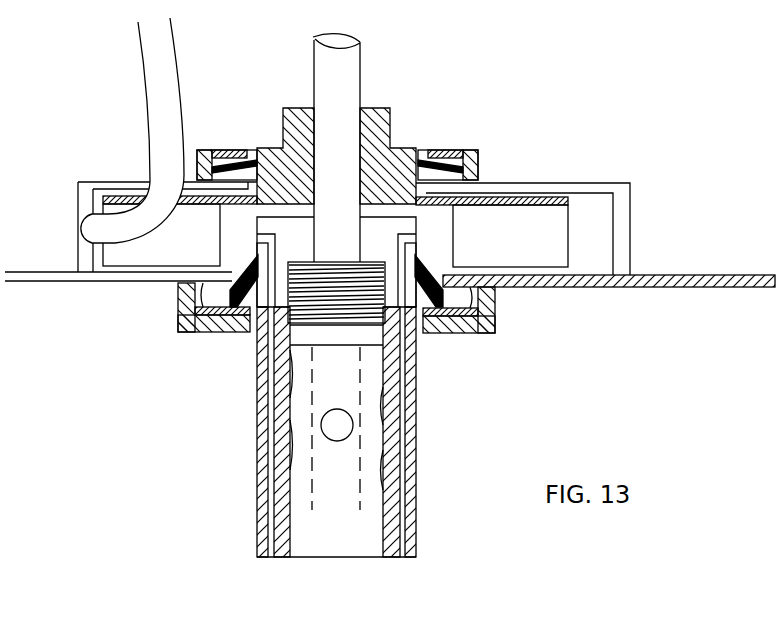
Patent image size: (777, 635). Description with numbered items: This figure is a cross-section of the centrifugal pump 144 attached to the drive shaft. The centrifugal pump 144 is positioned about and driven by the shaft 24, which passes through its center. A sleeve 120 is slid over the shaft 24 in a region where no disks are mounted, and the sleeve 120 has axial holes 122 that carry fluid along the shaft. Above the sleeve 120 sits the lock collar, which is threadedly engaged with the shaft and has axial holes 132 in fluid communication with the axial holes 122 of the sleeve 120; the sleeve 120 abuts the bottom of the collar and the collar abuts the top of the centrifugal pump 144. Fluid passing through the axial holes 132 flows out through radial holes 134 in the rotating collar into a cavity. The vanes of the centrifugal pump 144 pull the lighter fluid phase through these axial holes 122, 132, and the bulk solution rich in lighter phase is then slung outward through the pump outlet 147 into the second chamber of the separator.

The pump outlet 147 is at (179, 97).
The centrifugal pump 144 is at (520, 198).
The radial holes 134 is at (257, 234).
The axial holes 132 is at (266, 298).
The axial holes 122 is at (405, 372).
The sleeve 120 is at (416, 400).
The shaft 24 is at (370, 435).